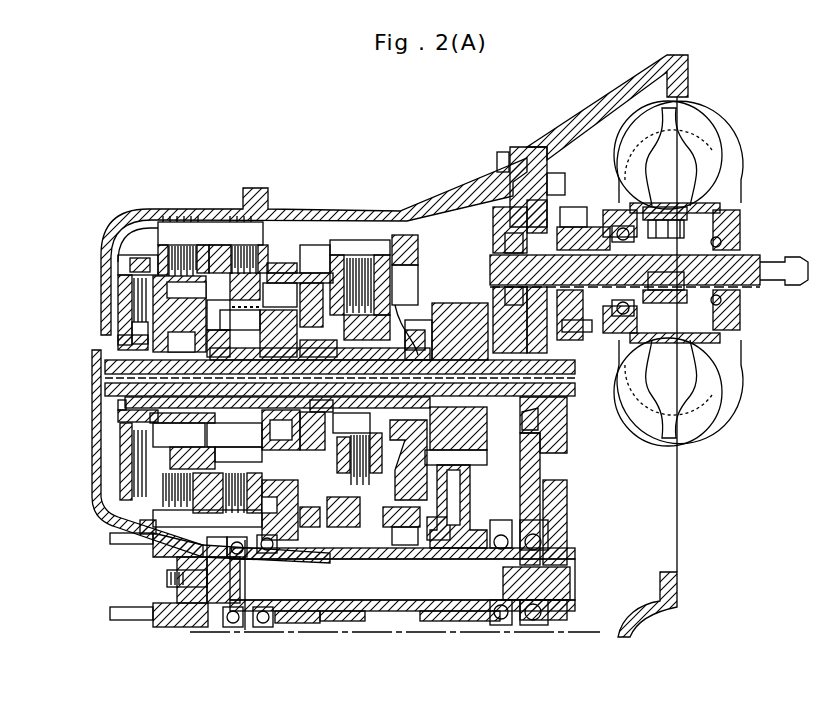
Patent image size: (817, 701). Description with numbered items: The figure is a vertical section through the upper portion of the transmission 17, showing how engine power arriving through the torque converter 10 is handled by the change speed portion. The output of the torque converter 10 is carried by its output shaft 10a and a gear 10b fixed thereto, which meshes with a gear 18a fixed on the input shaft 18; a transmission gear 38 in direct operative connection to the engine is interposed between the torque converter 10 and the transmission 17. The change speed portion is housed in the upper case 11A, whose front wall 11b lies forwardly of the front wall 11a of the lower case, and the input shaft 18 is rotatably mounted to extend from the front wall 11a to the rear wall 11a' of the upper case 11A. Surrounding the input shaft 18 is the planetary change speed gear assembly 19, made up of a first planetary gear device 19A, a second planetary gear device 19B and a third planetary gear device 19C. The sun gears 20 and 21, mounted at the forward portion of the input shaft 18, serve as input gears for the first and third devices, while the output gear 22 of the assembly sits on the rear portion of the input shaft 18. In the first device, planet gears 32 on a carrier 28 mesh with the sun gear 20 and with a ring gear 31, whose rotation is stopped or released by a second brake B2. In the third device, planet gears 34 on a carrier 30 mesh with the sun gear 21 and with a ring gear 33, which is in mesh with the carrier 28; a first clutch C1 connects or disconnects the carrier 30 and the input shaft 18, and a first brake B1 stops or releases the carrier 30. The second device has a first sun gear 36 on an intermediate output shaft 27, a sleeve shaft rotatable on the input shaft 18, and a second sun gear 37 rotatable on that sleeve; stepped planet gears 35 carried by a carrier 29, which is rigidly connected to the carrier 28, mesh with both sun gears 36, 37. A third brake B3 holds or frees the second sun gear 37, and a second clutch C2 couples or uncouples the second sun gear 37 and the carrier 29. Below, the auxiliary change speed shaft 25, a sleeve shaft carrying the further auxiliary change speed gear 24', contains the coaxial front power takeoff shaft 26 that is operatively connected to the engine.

The torque converter 10 is at (732, 120).
The output shaft 10a is at (586, 255).
The gear 10b is at (500, 232).
The upper case 11A is at (118, 230).
The front wall 11a is at (102, 470).
The rear wall 11a' is at (508, 160).
The front wall 11b is at (235, 628).
The transmission 17 is at (272, 150).
The input shaft 18 is at (560, 395).
The gear 18a is at (570, 452).
The planetary change speed gear assembly 19 is at (298, 232).
The first planetary gear device 19A is at (205, 170).
The second planetary gear device 19B is at (378, 232).
The third planetary gear device 19C is at (140, 238).
The sun gear 20 is at (118, 366).
The sun gear 21 is at (118, 410).
The output gear 22 is at (478, 456).
The auxiliary change speed gear 24' is at (320, 638).
The auxiliary change speed shaft 25 is at (397, 614).
The front power takeoff shaft 26 is at (566, 584).
The intermediate output shaft 27 is at (415, 353).
The carrier 28 is at (258, 325).
The carrier 29 is at (350, 242).
The carrier 30 is at (128, 498).
The ring gear 31 is at (270, 548).
The planet gears 32 is at (258, 456).
The ring gear 33 is at (126, 300).
The planet gears 34 is at (122, 452).
The planet gears 35 is at (312, 546).
The first sun gear 36 is at (319, 300).
The second sun gear 37 is at (335, 490).
The transmission gear 38 is at (566, 326).
The first brake B1 is at (182, 222).
The second brake B2 is at (240, 222).
The third brake B3 is at (393, 542).
The first clutch C1 is at (120, 527).
The second clutch C2 is at (366, 256).